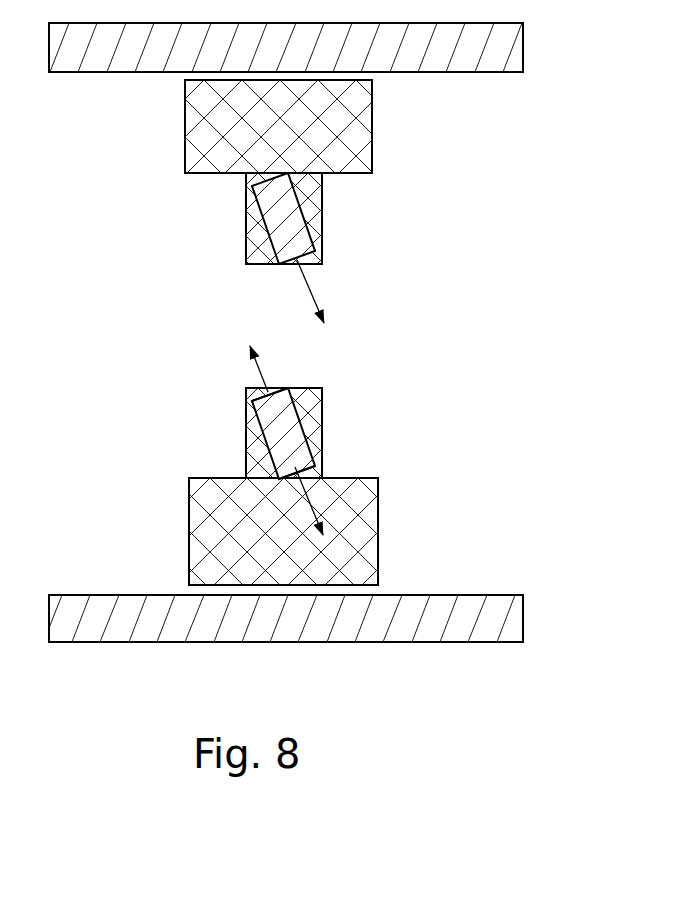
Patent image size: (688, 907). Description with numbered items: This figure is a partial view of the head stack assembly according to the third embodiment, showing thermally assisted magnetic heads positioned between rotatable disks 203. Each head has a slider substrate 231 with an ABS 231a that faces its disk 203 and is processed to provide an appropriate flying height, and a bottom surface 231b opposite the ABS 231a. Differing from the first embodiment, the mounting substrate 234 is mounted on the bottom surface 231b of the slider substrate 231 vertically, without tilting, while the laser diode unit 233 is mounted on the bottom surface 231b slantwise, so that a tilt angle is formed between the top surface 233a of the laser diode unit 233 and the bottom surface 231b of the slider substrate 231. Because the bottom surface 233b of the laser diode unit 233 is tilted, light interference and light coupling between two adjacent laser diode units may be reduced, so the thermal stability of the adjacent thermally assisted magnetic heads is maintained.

The rotatable disk 203 is at (503, 620).
The slider substrate 231 is at (360, 545).
The ABS 231a is at (228, 585).
The bottom surface 231b is at (208, 477).
The laser diode unit 233 is at (287, 420).
The top surface of the laser diode unit 233a is at (300, 470).
The bottom surface of the laser diode unit 233b is at (286, 392).
The mounting substrate 234 is at (317, 442).